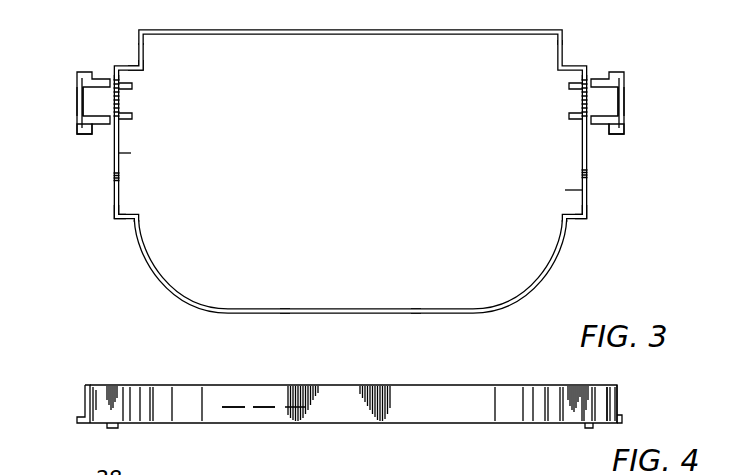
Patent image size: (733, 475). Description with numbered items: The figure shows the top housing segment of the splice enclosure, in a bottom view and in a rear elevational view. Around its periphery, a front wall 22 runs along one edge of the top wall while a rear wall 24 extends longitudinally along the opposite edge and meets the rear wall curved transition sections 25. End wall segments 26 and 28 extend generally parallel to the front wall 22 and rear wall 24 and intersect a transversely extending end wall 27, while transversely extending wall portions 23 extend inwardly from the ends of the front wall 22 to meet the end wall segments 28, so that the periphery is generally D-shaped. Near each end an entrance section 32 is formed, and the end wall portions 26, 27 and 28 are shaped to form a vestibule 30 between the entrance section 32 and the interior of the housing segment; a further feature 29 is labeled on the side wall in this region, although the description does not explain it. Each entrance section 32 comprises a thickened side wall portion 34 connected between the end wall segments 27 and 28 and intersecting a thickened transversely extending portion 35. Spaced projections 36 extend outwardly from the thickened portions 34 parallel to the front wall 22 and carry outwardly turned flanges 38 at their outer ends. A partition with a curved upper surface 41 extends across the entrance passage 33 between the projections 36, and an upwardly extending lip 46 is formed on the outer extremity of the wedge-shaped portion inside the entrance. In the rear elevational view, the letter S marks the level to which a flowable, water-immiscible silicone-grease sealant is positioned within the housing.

In FIG. 3, the front wall 22 is at (348, 30).
In FIG. 3, the transversely extending wall portions 23 is at (136, 43).
In FIG. 3, the rear wall 24 is at (423, 315).
In FIG. 4, the rear wall 24 is at (342, 408).
In FIG. 3, the rear wall curved transition sections 25 is at (156, 282).
In FIG. 4, the rear wall curved transition sections 25 is at (163, 398).
In FIG. 3, the end wall segment 26 is at (123, 224).
In FIG. 4, the end wall segment 26 is at (118, 388).
In FIG. 3, the transversely extending end wall 27 is at (113, 198).
In FIG. 3, the end wall segment 28 is at (126, 66).
In FIG. 3, the rib 29 is at (112, 178).
In FIG. 3, the vestibule 30 is at (116, 155).
In FIG. 3, the entrance section 32 is at (72, 82).
In FIG. 3, the entrance passage 33 is at (90, 100).
In FIG. 4, the thickened side wall portion 34 is at (590, 412).
In FIG. 4, the thickened transversely extending portion 35 is at (590, 424).
In FIG. 3, the spaced projections 36 is at (597, 128).
In FIG. 3, the outwardly turned flanges 38 is at (97, 130).
In FIG. 3, the curved upper surface 41 is at (120, 102).
In FIG. 4, the upwardly extending lip 46 is at (620, 419).
In FIG. 4, the sealant level S is at (275, 407).